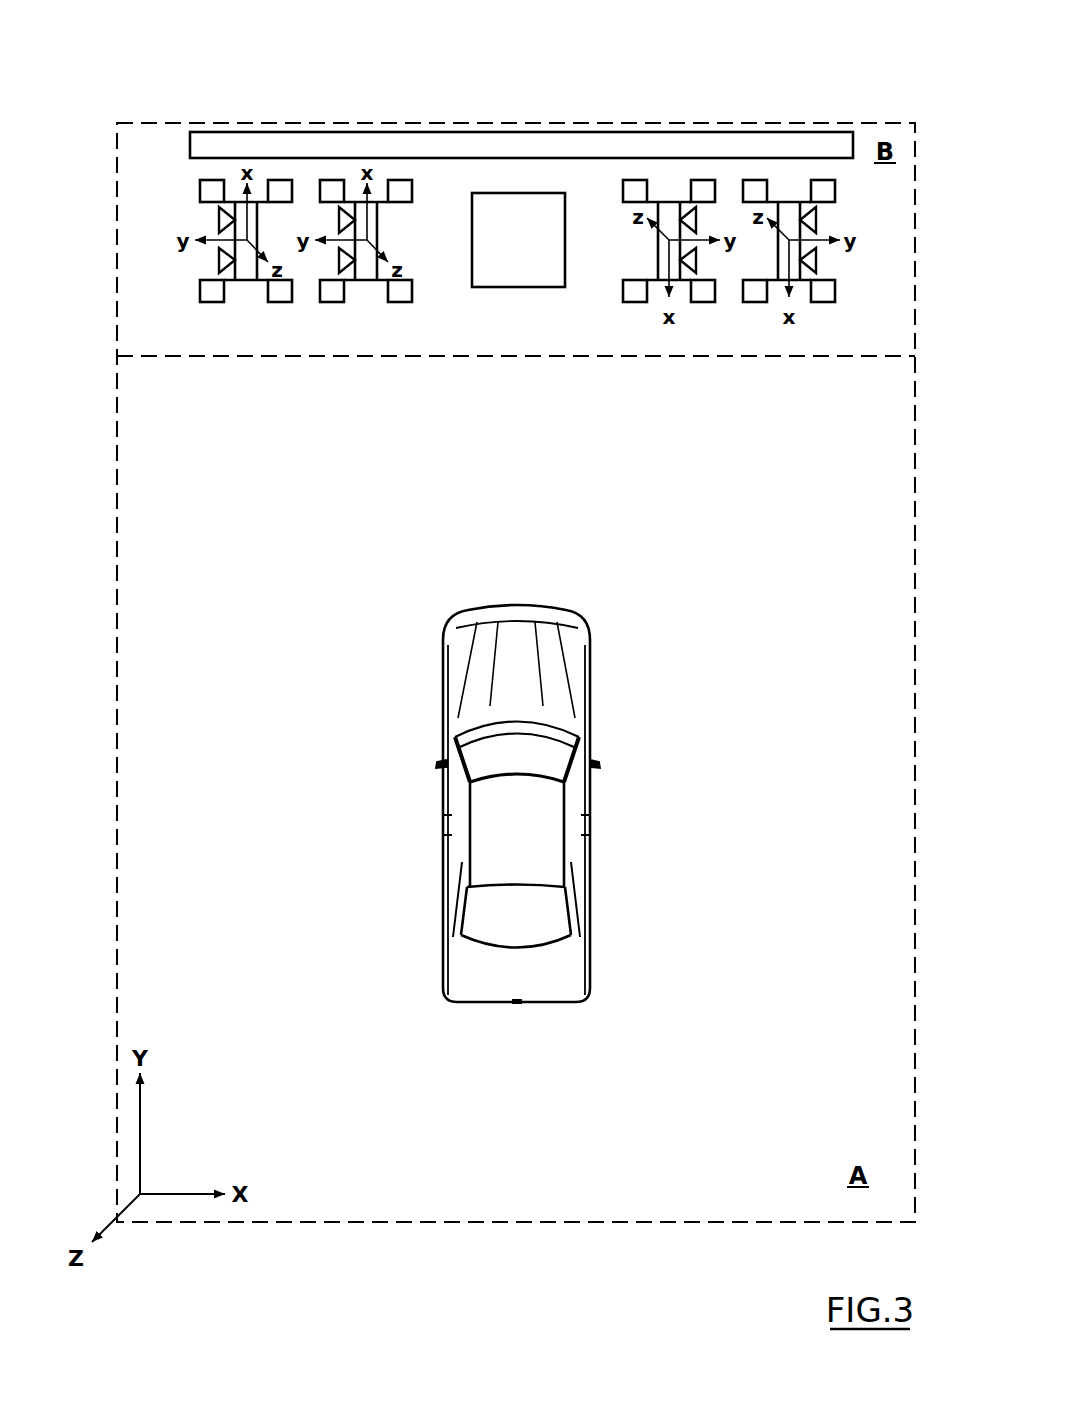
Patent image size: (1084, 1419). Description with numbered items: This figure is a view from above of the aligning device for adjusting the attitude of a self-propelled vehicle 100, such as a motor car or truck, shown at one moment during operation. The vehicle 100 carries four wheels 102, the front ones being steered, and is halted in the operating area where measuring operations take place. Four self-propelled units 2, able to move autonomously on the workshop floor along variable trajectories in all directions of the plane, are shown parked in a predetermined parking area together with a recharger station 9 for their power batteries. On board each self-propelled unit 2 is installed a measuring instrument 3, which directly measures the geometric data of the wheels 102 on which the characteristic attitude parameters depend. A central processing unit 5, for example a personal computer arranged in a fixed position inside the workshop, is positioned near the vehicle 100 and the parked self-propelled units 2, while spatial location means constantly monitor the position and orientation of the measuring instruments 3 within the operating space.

The self-propelled unit 2 is at (248, 273).
The measuring instrument 3 is at (218, 221).
The central processing unit 5 is at (513, 225).
The recharger station 9 is at (345, 145).
The self-propelled vehicle 100 is at (558, 987).
The wheel 102 is at (441, 668).